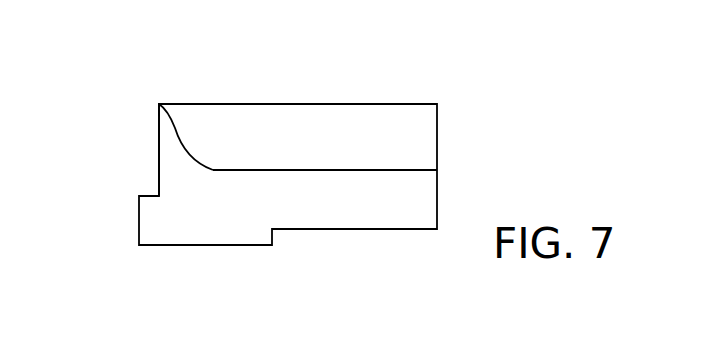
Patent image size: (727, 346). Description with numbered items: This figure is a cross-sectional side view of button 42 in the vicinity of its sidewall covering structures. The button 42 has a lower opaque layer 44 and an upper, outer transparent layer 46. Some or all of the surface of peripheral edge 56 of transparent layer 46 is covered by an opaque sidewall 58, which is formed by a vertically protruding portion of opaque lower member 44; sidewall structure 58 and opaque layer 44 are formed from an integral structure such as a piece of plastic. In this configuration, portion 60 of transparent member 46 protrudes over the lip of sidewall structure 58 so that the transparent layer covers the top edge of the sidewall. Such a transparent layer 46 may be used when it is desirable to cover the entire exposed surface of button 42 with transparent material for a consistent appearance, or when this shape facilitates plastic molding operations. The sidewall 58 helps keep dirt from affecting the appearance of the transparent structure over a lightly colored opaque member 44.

The button 42 is at (90, 89).
The opaque lower member 44 is at (355, 212).
The transparent layer 46 is at (367, 120).
The peripheral edge 56 is at (180, 135).
The opaque sidewall 58 is at (170, 158).
The protruding portion 60 is at (160, 104).